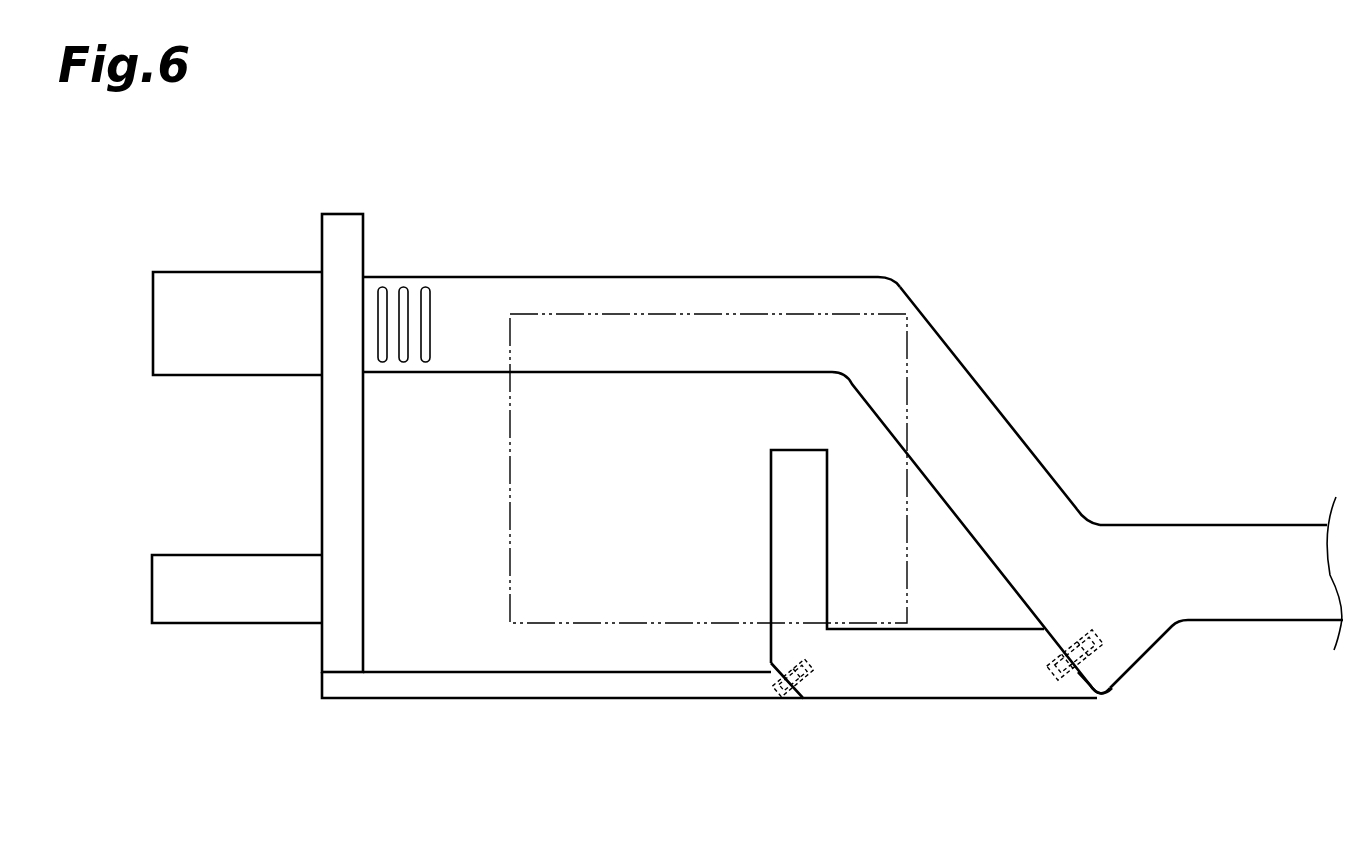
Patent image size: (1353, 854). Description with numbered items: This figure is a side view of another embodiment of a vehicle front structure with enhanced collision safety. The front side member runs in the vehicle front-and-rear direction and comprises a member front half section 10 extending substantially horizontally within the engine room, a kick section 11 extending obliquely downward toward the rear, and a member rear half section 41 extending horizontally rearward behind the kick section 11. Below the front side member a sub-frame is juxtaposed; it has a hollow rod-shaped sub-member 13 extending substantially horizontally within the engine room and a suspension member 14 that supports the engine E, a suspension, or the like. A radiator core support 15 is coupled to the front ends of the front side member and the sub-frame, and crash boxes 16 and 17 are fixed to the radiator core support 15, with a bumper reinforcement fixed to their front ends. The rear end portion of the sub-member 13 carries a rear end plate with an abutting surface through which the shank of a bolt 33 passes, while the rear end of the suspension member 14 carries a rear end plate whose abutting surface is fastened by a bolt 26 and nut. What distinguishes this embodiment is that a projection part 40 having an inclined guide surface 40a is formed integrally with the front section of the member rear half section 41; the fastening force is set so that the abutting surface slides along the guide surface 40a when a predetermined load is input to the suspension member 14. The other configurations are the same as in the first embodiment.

The member front half section 10 is at (717, 277).
The kick section 11 is at (1014, 429).
The sub-member 13 is at (657, 701).
The suspension member 14 is at (932, 701).
The radiator core support 15 is at (364, 237).
The crash box 16 is at (222, 272).
The crash box 17 is at (220, 555).
The bolt 26 is at (1100, 647).
The bolt 33 is at (808, 672).
The projection part 40 is at (1163, 640).
The inclined guide surface 40a is at (1080, 683).
The member rear half section 41 is at (1233, 524).
The engine E is at (510, 520).